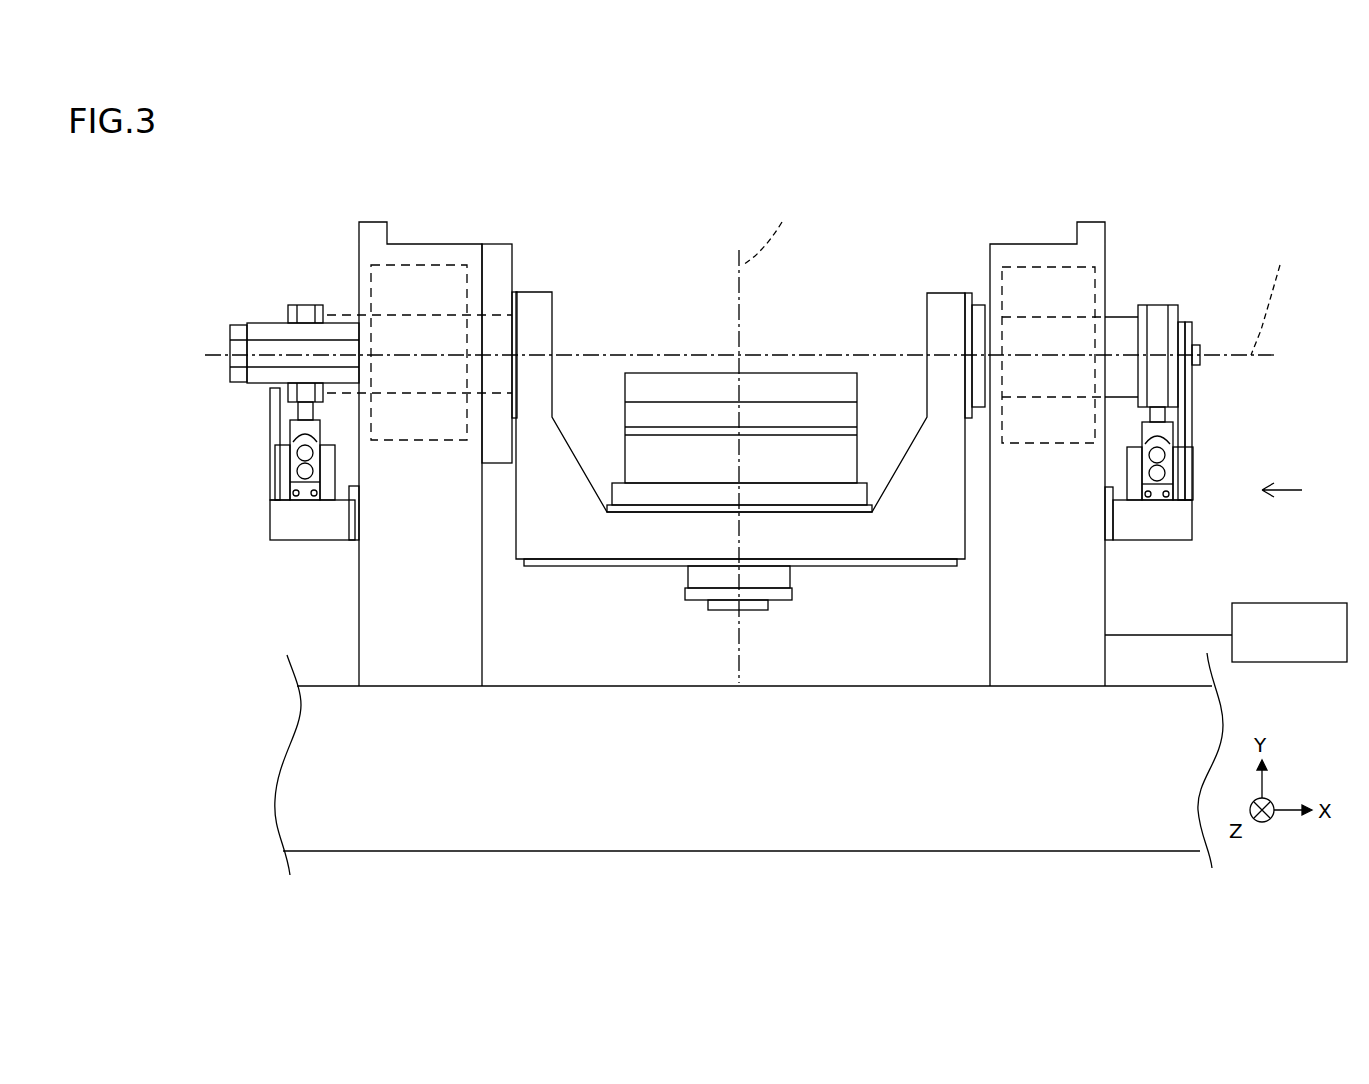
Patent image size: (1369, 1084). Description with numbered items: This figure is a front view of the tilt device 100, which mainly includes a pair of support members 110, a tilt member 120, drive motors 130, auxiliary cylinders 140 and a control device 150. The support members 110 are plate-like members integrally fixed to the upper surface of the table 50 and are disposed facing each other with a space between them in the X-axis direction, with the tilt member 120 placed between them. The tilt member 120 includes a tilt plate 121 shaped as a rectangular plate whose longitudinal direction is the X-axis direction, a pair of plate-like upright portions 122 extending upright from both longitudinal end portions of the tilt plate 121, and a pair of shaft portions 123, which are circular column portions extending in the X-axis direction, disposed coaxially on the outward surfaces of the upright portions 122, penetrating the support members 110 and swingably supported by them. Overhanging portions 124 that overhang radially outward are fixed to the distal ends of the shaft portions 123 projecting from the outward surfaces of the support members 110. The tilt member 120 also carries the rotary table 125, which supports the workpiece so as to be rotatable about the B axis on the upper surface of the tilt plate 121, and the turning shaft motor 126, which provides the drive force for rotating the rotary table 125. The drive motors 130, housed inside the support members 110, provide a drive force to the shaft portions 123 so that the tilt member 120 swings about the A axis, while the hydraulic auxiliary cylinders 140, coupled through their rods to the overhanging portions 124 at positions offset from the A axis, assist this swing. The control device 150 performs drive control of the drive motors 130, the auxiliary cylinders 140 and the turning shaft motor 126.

The table 50 is at (332, 698).
The tilt device 100 is at (307, 185).
The support member 110 is at (370, 582).
The tilt member 120 is at (938, 262).
The tilt plate 121 is at (740, 567).
The upright portion 122 is at (552, 331).
The shaft portion 123 is at (443, 305).
The overhanging portion 124 is at (248, 297).
The rotary table 125 is at (698, 373).
The turning shaft motor 126 is at (780, 580).
The drive motor 130 is at (400, 238).
The auxiliary cylinder 140 is at (287, 433).
The control device 150 is at (1282, 603).